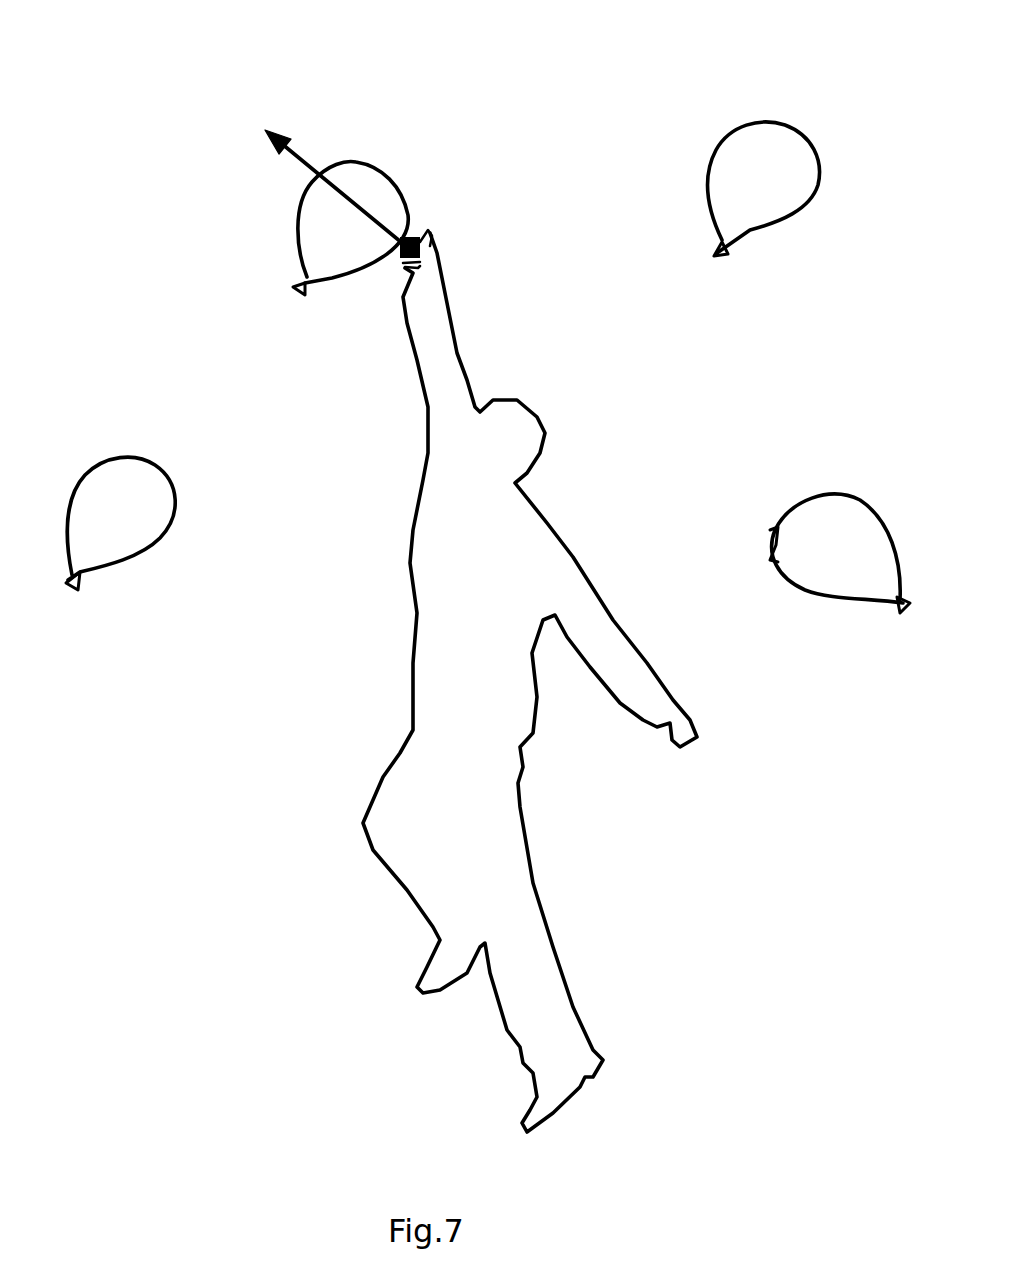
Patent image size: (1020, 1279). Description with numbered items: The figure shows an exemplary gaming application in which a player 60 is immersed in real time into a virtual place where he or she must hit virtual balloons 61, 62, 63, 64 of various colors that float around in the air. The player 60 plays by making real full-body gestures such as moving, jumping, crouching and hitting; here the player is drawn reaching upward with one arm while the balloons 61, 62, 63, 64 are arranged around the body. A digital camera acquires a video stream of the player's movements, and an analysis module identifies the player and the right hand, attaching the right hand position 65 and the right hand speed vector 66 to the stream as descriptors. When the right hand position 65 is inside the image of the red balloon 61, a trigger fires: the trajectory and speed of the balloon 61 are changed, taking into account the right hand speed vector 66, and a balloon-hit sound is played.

The player 60 is at (520, 597).
The red balloon 61 is at (353, 257).
The virtual balloon 62 is at (115, 558).
The virtual balloon 63 is at (747, 233).
The virtual balloon 64 is at (847, 597).
The right hand position 65 is at (423, 233).
The right hand speed vector 66 is at (293, 135).